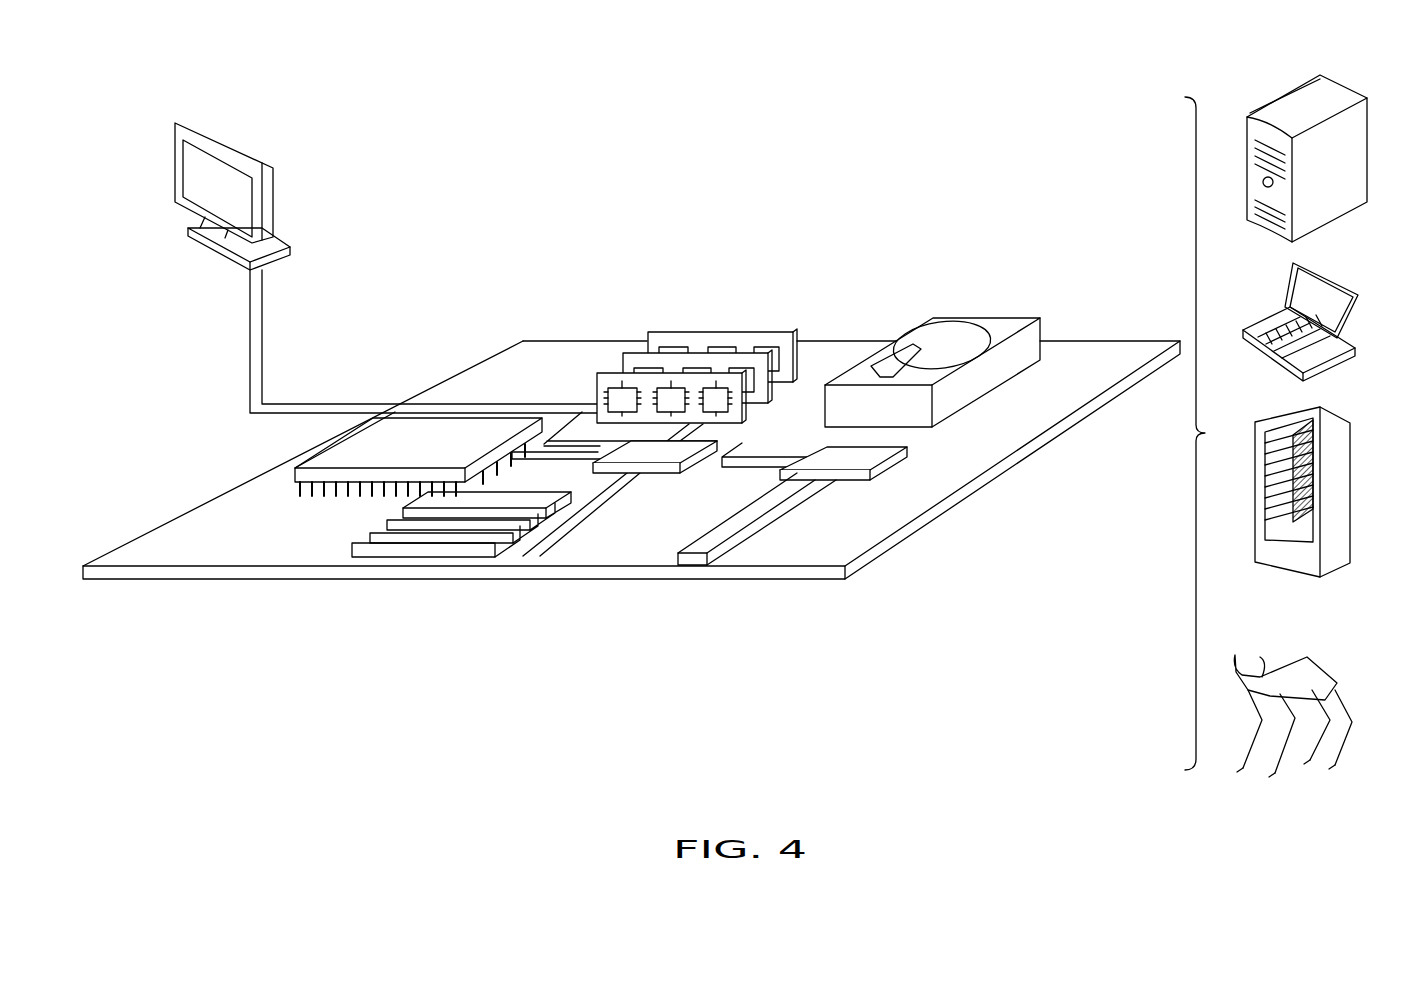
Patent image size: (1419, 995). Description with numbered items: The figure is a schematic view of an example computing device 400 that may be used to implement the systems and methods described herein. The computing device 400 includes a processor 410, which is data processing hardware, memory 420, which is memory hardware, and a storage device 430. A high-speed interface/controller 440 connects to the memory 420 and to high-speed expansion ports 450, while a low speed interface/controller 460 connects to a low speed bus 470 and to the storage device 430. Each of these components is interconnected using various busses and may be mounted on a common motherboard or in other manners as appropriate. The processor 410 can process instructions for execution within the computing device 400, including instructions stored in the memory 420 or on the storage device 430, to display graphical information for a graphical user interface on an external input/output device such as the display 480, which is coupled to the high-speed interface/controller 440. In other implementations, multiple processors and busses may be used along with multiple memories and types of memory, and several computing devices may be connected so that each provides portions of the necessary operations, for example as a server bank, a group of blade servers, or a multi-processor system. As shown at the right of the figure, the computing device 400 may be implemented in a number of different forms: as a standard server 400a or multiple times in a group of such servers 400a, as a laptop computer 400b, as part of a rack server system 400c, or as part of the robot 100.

The computing device 400 is at (995, 84).
The processor 410 is at (293, 470).
The memory 420 is at (714, 330).
The storage device 430 is at (979, 317).
The high-speed interface/controller 440 is at (661, 476).
The high-speed expansion ports 450 is at (353, 543).
The low speed interface/controller 460 is at (830, 452).
The low speed bus 470 is at (712, 577).
The display 480 is at (174, 170).
The standard server 400a is at (1277, 92).
The laptop computer 400b is at (1338, 287).
The rack server system 400c is at (1345, 470).
The robot 100 is at (1327, 683).